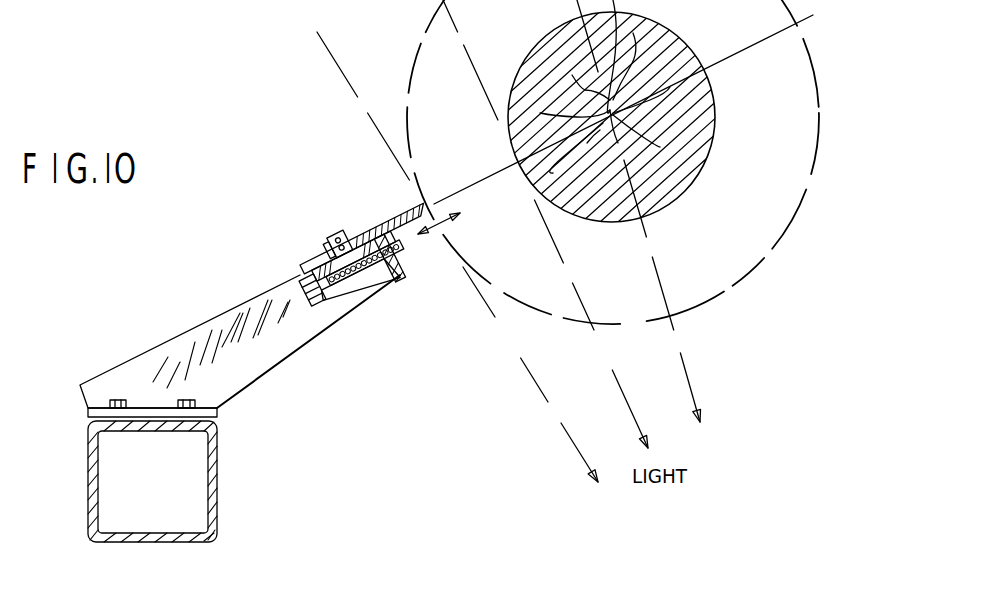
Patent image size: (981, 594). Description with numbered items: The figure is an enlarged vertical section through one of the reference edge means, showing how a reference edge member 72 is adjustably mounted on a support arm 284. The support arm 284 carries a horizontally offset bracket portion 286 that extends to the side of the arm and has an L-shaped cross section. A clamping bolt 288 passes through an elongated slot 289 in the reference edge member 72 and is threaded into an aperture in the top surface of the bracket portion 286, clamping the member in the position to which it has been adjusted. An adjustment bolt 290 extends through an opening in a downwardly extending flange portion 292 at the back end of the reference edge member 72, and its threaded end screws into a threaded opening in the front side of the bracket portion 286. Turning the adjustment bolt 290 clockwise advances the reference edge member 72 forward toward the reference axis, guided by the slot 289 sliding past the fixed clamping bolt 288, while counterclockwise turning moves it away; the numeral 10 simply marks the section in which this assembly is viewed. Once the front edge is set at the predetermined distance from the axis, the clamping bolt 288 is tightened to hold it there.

The eye 10 is at (682, 43).
The reference edge member 72 is at (407, 206).
The support arm 284 is at (210, 326).
The bracket portion 286 is at (398, 266).
The clamping bolt 288 is at (340, 233).
The elongated slot 289 is at (330, 246).
The adjustment bolt 290 is at (363, 273).
The flange portion 292 is at (323, 300).